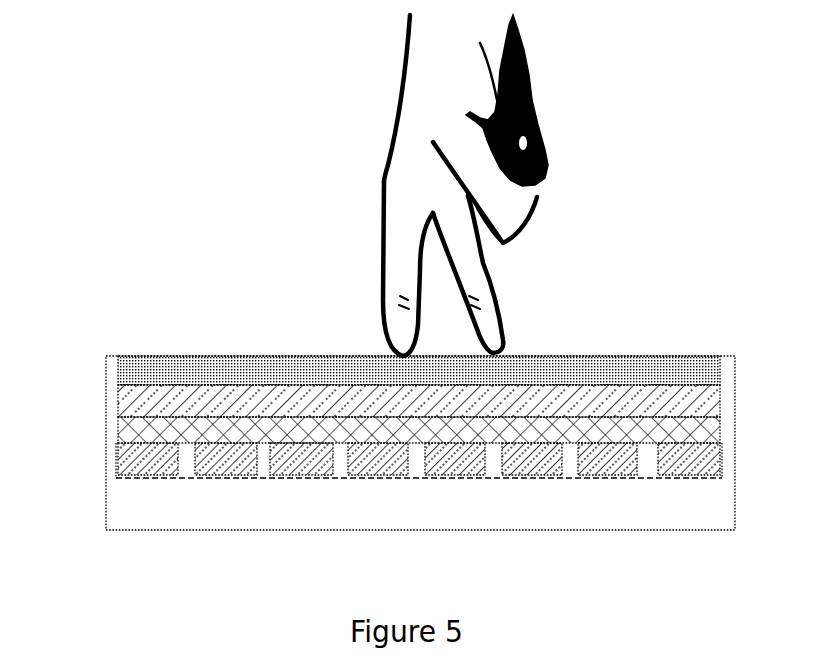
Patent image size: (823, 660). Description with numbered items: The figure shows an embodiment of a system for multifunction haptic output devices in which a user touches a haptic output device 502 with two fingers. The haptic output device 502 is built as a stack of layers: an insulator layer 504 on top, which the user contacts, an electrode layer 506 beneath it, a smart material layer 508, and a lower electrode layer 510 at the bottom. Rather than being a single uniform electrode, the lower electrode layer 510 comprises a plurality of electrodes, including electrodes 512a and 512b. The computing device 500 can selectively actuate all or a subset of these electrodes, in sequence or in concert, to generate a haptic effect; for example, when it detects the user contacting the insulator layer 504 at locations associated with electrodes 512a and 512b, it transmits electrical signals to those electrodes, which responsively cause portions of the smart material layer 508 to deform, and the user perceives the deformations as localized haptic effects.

The computing device 500 is at (605, 500).
The haptic output device 502 is at (735, 357).
The insulator layer 504 is at (637, 355).
The electrode layer 506 is at (118, 402).
The smart material layer 508 is at (118, 432).
The lower electrode layer 510 is at (462, 482).
The electrode 512a is at (378, 478).
The electrode 512b is at (530, 478).